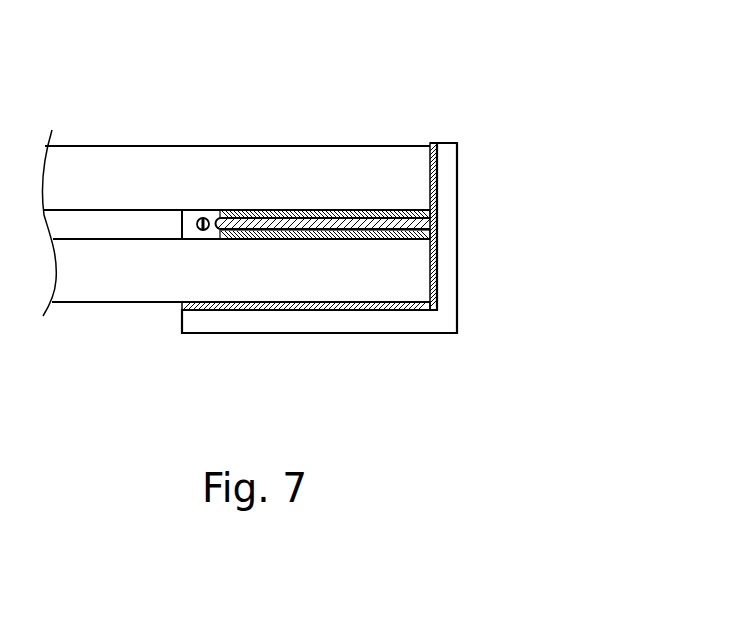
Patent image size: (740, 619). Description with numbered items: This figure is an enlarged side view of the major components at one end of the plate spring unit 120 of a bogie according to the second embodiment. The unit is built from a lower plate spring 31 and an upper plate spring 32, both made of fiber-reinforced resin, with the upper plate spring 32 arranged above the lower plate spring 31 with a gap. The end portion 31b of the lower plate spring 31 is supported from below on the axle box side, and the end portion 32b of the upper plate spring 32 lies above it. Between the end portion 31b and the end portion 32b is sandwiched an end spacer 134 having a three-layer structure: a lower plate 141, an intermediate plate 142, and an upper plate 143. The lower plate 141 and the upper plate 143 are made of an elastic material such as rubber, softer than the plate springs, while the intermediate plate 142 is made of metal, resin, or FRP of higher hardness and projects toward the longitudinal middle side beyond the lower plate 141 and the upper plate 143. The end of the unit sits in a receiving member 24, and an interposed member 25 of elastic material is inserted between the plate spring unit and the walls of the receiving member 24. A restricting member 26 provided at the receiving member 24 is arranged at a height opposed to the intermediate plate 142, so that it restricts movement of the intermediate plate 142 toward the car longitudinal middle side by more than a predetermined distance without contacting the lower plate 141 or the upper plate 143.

The plate spring unit 120 is at (160, 146).
The upper plate spring 32 is at (83, 163).
The end portion of the upper plate spring 32b is at (323, 158).
The lower plate spring 31 is at (82, 292).
The end portion of the lower plate spring 31b is at (275, 285).
The restricting member 26 is at (200, 229).
The interposed member 25 is at (433, 143).
The receiving member 24 is at (457, 320).
The end spacer 134 is at (436, 216).
The upper plate 143 is at (413, 212).
The intermediate plate 142 is at (437, 221).
The lower plate 141 is at (396, 254).